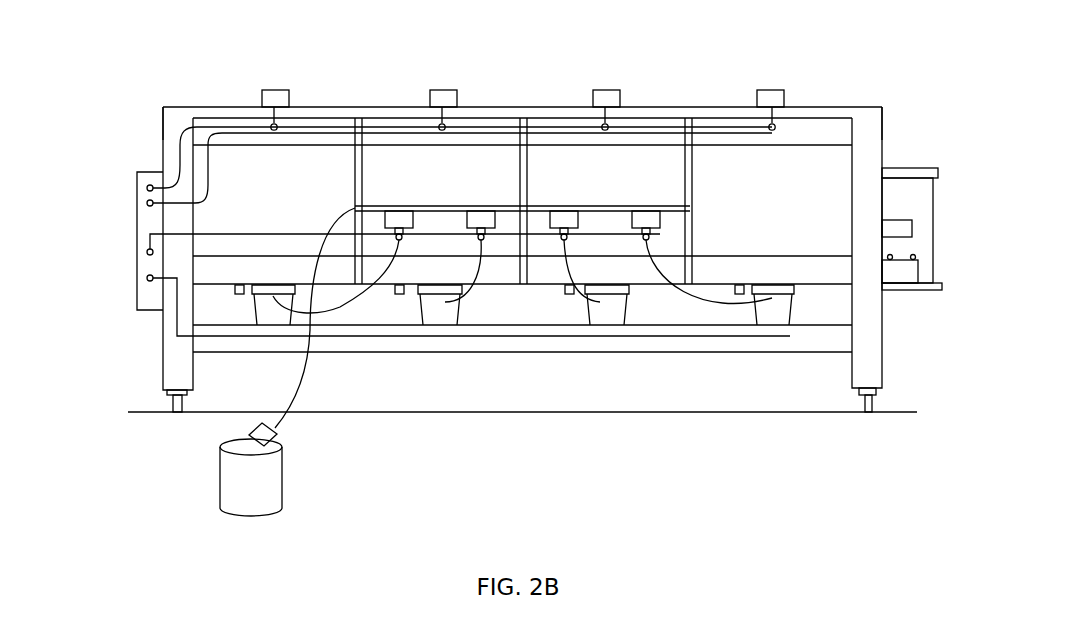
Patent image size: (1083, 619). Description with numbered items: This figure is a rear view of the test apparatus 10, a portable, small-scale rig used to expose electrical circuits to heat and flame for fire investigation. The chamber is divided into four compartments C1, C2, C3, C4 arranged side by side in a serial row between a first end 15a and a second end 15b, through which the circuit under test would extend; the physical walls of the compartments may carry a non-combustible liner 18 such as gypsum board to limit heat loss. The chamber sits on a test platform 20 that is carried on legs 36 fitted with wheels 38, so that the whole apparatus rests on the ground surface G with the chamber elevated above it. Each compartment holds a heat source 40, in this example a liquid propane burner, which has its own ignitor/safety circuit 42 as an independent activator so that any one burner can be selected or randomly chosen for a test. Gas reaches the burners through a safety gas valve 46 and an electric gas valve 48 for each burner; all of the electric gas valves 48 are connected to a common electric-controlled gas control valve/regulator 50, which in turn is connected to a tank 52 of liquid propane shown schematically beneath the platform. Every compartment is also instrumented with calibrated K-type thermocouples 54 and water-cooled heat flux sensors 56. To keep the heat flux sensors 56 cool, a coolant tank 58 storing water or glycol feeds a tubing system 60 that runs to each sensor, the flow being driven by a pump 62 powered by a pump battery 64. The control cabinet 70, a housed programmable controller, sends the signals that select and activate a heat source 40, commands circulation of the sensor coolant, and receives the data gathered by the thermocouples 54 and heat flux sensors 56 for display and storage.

The test apparatus 10 is at (143, 58).
The first end 15a is at (150, 112).
The second end 15b is at (895, 130).
The liner 18 is at (242, 180).
The test platform 20 is at (152, 333).
The legs 36 is at (163, 363).
The wheels 38 is at (173, 405).
The heat source 40 is at (285, 313).
The ignitor/safety circuit 42 is at (236, 289).
The safety gas valve 46 is at (355, 207).
The electric gas valve 48 is at (398, 216).
The gas control valve/regulator 50 is at (278, 435).
The tank 52 is at (283, 490).
The thermocouples 54 is at (274, 138).
The heat flux sensors 56 is at (275, 90).
The coolant tank 58 is at (918, 205).
The tubing system 60 is at (178, 157).
The pump 62 is at (912, 228).
The pump battery 64 is at (900, 273).
The control cabinet 70 is at (137, 233).
The first compartment C1 is at (312, 167).
The second compartment C2 is at (488, 165).
The third compartment C3 is at (660, 165).
The fourth compartment C4 is at (813, 165).
The ground surface G is at (476, 413).